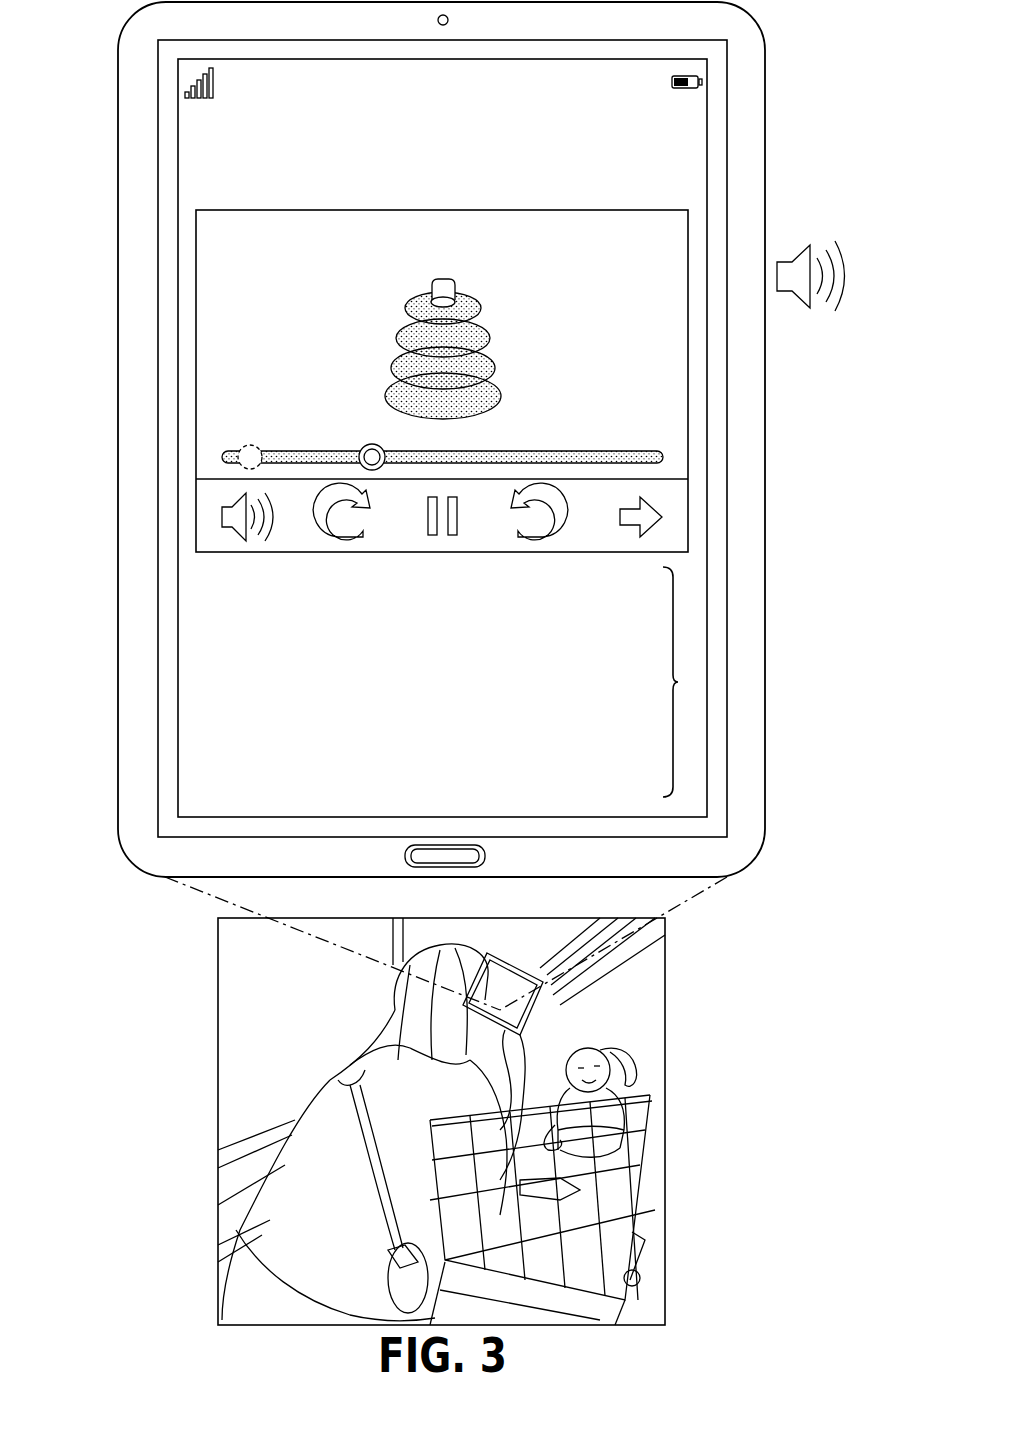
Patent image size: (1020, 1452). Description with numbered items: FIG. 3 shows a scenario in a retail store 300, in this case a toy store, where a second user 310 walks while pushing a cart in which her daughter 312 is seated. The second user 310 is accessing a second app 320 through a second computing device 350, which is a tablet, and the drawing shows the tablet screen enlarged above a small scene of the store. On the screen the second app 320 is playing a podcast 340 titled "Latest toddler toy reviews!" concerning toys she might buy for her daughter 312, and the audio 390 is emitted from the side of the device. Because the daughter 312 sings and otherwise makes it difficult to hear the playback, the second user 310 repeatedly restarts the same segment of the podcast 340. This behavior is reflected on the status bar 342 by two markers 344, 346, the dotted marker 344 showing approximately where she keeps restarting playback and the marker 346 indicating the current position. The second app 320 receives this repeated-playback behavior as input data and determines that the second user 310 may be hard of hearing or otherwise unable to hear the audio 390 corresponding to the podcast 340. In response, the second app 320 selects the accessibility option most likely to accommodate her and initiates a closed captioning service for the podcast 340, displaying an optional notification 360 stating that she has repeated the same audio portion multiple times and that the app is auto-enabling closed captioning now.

The retail store 300 is at (218, 1055).
The second user 310 is at (375, 997).
The daughter 312 is at (635, 1072).
The second app 320 is at (643, 126).
The podcast 340 is at (243, 302).
The status bar 342 is at (560, 448).
The marker 344 is at (247, 445).
The marker 346 is at (366, 444).
The second computing device 350 is at (118, 402).
The notification 360 is at (678, 682).
The audio 390 is at (817, 323).